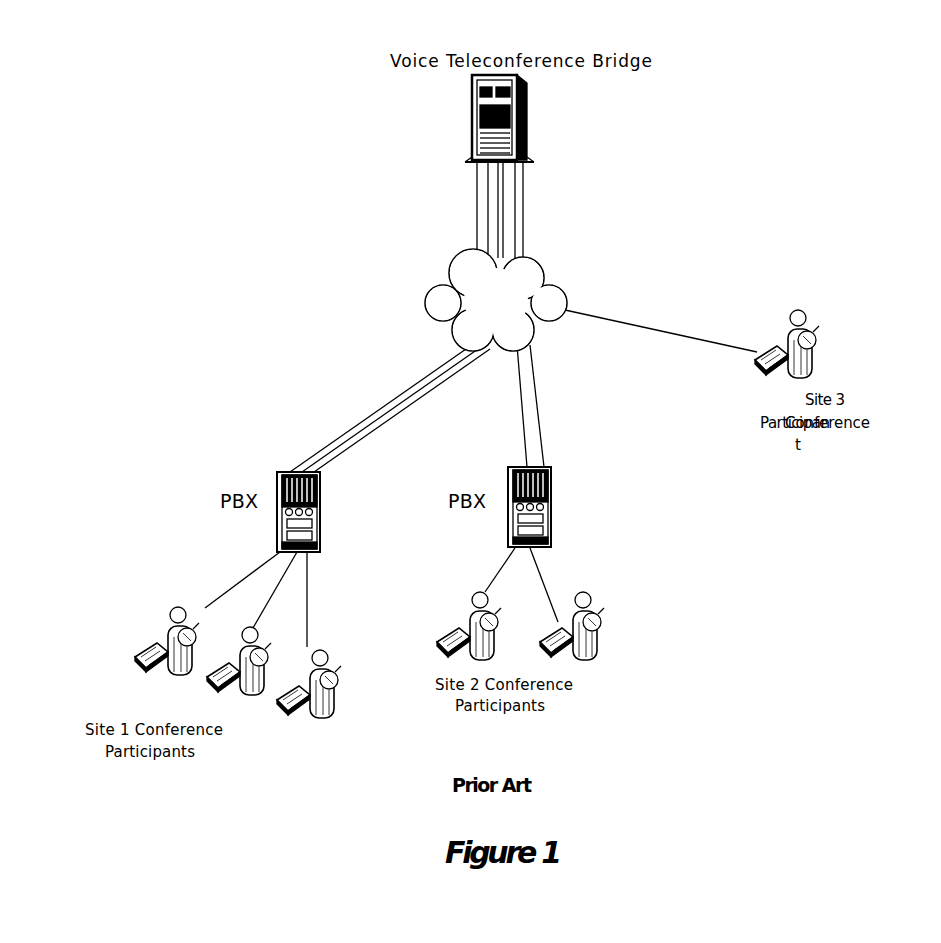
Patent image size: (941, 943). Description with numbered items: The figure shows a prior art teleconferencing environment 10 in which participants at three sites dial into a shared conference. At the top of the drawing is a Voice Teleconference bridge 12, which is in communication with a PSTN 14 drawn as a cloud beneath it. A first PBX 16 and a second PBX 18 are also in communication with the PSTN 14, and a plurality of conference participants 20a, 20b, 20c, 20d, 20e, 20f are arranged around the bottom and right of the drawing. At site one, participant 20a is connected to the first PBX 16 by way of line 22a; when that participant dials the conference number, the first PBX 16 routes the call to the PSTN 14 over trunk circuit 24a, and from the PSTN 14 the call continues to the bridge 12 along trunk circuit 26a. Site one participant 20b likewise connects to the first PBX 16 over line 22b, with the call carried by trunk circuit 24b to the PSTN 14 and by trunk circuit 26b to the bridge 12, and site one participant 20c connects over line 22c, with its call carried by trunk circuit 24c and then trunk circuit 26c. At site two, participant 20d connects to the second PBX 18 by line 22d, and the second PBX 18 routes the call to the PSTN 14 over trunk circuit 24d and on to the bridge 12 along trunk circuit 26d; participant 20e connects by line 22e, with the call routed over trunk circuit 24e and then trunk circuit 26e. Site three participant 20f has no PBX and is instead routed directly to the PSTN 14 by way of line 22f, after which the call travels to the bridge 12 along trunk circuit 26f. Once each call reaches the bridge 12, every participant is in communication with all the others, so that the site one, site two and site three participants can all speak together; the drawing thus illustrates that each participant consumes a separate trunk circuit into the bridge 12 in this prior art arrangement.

The teleconferencing environment 10 is at (145, 37).
The Voice Teleconference bridge 12 is at (538, 118).
The PSTN 14 is at (528, 297).
The first PBX 16 is at (339, 506).
The second PBX 18 is at (570, 500).
The site 1 participant 20a is at (128, 639).
The site 1 participant 20b is at (283, 685).
The site 1 participant 20c is at (351, 684).
The site 2 participant 20d is at (560, 640).
The site 2 participant 20e is at (614, 626).
The site 3 participant 20f is at (832, 333).
The line 22a is at (216, 566).
The line 22b is at (231, 590).
The line 22c is at (355, 599).
The line 22d is at (453, 557).
The line 22e is at (586, 585).
The line 22f is at (661, 320).
The trunk circuit 24a is at (350, 410).
The trunk circuit 24b is at (370, 410).
The trunk circuit 24c is at (393, 410).
The trunk circuit 24d is at (573, 406).
The trunk circuit 24e is at (583, 406).
The trunk circuit 26a is at (425, 201).
The trunk circuit 26b is at (430, 210).
The trunk circuit 26c is at (437, 210).
The trunk circuit 26d is at (560, 205).
The trunk circuit 26e is at (565, 210).
The trunk circuit 26f is at (568, 210).